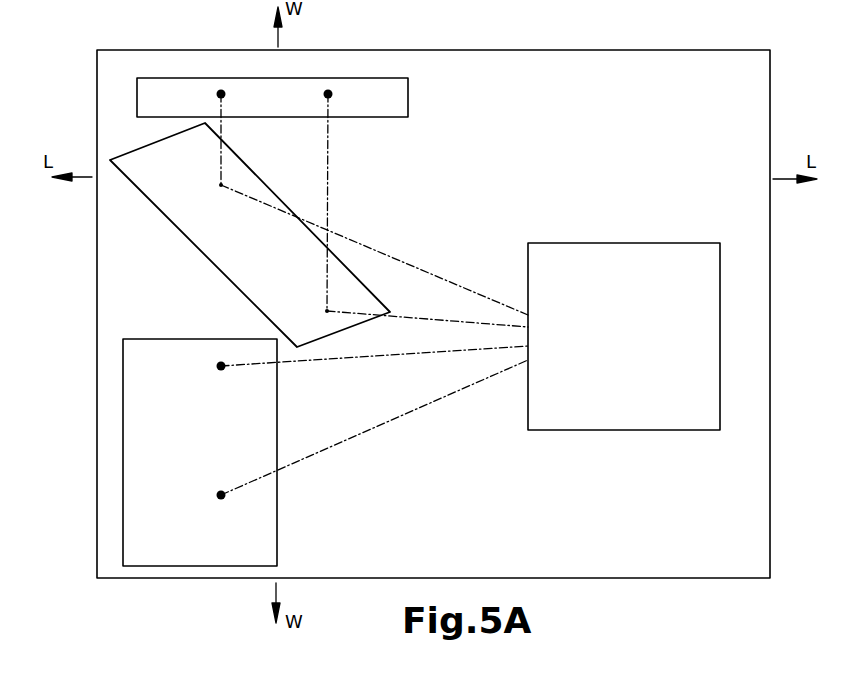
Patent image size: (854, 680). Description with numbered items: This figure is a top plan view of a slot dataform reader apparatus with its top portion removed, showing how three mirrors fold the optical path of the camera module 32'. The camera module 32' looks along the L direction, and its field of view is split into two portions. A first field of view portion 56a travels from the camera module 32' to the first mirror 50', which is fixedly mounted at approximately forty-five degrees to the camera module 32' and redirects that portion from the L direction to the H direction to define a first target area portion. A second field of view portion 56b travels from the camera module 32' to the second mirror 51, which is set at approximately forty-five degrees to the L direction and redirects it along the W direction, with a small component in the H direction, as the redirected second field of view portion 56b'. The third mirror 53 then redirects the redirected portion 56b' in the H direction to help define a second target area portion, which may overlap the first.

The third mirror 53 is at (381, 93).
The second mirror 51 is at (180, 202).
The camera module 32' is at (677, 336).
The first mirror 50' is at (200, 478).
The redirected second field of view portion 56b' is at (315, 203).
The second field of view portion 56b is at (374, 256).
The first field of view portion 56a is at (393, 382).